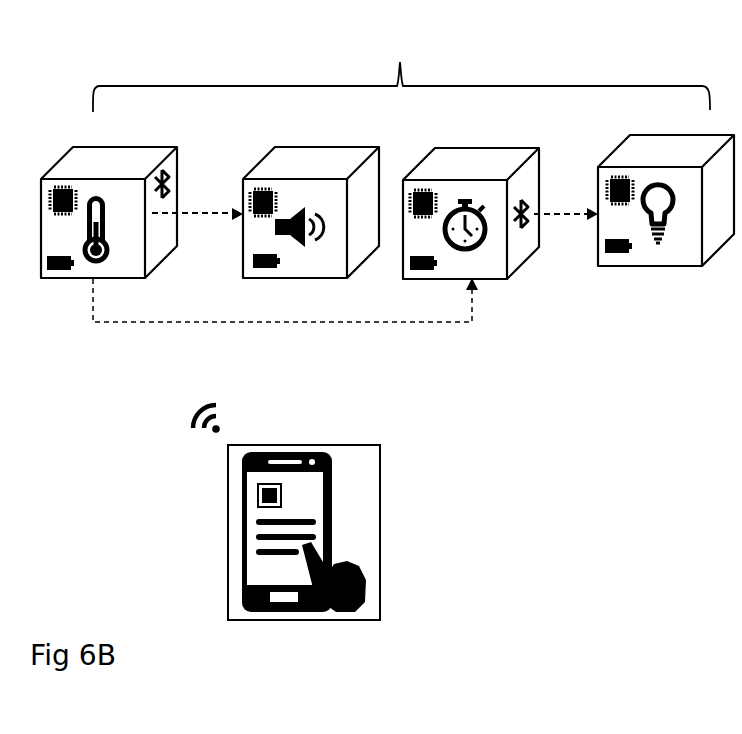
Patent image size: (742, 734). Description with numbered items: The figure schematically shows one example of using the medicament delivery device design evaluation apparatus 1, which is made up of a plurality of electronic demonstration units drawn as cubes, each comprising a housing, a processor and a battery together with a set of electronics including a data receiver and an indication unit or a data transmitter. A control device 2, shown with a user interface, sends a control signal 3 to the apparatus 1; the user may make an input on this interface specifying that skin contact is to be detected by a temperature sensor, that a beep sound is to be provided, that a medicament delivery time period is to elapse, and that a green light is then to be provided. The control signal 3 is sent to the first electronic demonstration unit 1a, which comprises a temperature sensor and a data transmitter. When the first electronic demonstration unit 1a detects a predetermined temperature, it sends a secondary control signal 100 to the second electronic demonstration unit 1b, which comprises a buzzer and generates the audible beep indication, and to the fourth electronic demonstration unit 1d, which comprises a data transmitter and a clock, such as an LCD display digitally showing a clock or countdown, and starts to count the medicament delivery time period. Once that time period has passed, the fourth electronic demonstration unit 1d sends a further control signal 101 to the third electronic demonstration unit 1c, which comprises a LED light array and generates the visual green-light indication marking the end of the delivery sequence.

The medicament delivery device design evaluation apparatus 1 is at (401, 62).
The first electronic demonstration unit 1a is at (63, 161).
The second electronic demonstration unit 1b is at (257, 167).
The third electronic demonstration unit 1c is at (608, 160).
The fourth electronic demonstration unit 1d is at (453, 147).
The secondary control signal 100 is at (285, 284).
The further control signal 101 is at (566, 232).
The control device 2 is at (381, 481).
The control signal 3 is at (192, 429).